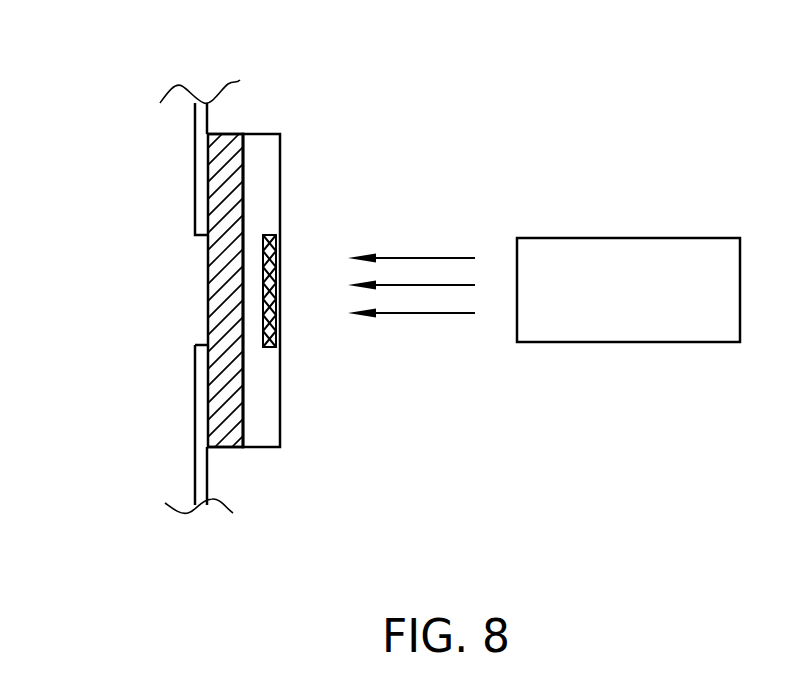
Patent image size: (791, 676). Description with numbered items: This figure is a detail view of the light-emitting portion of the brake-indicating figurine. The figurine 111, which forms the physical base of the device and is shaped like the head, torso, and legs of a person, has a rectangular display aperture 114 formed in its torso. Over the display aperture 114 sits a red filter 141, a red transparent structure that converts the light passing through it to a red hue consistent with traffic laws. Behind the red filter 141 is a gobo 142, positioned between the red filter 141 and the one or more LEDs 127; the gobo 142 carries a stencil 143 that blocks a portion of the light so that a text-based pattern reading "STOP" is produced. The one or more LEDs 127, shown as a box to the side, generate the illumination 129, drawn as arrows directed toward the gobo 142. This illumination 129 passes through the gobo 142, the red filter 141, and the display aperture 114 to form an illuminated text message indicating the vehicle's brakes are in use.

The figurine 111 is at (195, 170).
The display aperture 114 is at (207, 297).
The red filter 141 is at (228, 145).
The gobo 142 is at (268, 160).
The stencil 143 is at (272, 262).
The illumination 129 is at (430, 258).
The one or more LEDs 127 is at (621, 238).